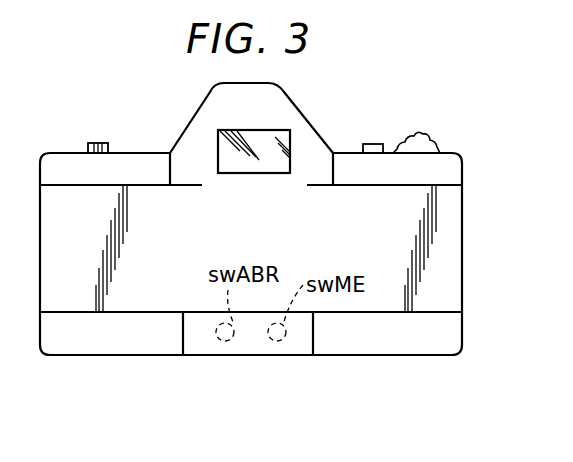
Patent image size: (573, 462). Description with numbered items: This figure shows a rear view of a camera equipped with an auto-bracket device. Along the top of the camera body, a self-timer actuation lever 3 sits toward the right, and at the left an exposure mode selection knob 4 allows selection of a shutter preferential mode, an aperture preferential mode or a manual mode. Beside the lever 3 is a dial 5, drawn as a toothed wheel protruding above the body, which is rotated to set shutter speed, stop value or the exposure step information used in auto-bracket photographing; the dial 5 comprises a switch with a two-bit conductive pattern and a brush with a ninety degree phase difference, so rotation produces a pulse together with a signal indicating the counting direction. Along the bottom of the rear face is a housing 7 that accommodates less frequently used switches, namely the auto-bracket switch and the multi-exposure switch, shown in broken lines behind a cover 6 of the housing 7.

The self-timer actuation lever 3 is at (373, 143).
The exposure mode selection knob 4 is at (97, 143).
The dial 5 is at (418, 137).
The cover 6 is at (298, 340).
The housing 7 is at (198, 338).